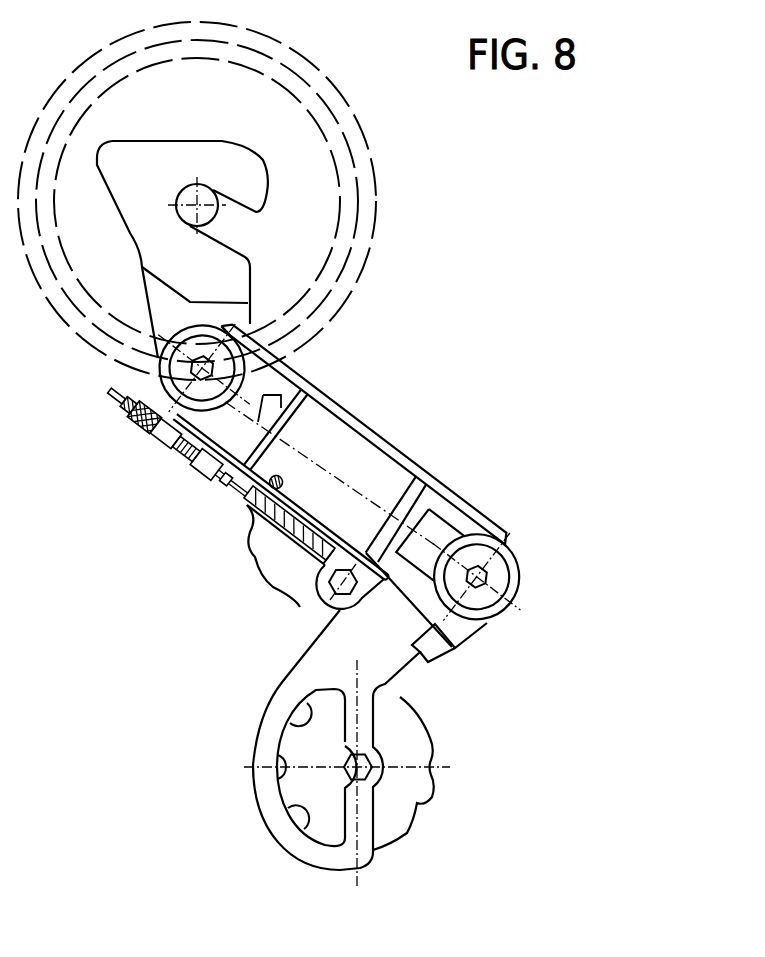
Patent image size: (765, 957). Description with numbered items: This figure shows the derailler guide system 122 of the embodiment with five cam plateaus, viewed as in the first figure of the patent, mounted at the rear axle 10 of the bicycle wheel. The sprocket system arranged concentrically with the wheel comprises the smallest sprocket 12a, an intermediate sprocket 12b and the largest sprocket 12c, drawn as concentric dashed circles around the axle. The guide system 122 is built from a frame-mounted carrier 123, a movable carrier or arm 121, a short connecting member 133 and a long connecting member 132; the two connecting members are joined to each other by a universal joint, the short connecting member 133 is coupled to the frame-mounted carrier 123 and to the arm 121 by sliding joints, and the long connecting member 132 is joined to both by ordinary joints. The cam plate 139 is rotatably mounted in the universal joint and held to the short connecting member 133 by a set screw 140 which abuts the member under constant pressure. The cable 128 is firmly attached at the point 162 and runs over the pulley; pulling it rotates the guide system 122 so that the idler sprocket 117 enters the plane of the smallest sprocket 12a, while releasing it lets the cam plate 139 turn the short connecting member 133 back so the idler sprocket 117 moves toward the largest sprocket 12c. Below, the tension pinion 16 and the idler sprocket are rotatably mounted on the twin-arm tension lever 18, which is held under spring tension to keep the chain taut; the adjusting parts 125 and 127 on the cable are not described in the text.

The rear axle 10 is at (207, 213).
The sprocket 12a is at (303, 105).
The sprocket 12b is at (353, 141).
The sprocket 12c is at (377, 184).
The tension pinion 16 is at (419, 797).
The tension lever 18 is at (408, 670).
The idler sprocket 117 is at (283, 563).
The movable carrier or arm 121 is at (440, 533).
The guide system 122 is at (436, 422).
The frame-mounted carrier 123 is at (217, 158).
The adjusting nut 125 is at (203, 467).
The cable adjuster 127 is at (140, 432).
The cable 128 is at (122, 402).
The long connecting member 132 is at (422, 475).
The short connecting member 133 is at (348, 442).
The cam plate 139 is at (282, 533).
The screw 140 is at (230, 495).
The attachment point 162 is at (341, 606).